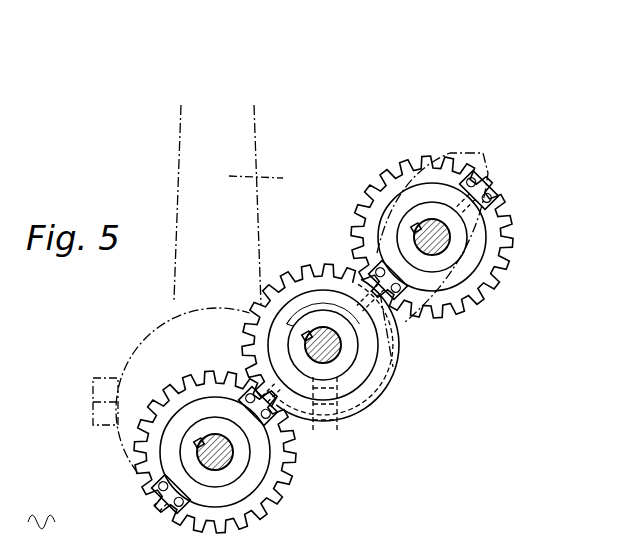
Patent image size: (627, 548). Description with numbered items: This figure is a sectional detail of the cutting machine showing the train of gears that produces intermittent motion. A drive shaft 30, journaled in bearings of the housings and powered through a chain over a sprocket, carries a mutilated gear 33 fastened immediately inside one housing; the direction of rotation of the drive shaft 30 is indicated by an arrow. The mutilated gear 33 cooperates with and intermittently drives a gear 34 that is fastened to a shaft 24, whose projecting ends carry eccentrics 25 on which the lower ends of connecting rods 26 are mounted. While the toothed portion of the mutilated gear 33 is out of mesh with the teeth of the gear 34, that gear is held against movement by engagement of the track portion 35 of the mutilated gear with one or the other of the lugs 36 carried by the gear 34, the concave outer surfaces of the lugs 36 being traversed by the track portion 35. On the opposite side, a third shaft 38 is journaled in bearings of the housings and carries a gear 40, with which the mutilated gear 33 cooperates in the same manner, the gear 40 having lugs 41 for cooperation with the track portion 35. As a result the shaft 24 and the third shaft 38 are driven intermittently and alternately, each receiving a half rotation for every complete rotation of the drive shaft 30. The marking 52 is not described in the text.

The shaft 24 is at (215, 440).
The eccentrics 25 is at (140, 342).
The connecting rods 26 is at (283, 178).
The drive shaft 30 is at (343, 352).
The mutilated gear 33 is at (326, 282).
The gear 34 is at (273, 507).
The track portion 35 is at (373, 407).
The lugs 36 is at (252, 401).
The third shaft 38 is at (452, 247).
The gear 40 is at (480, 237).
The lugs 41 is at (478, 186).
The sheet reference 52 is at (480, 537).